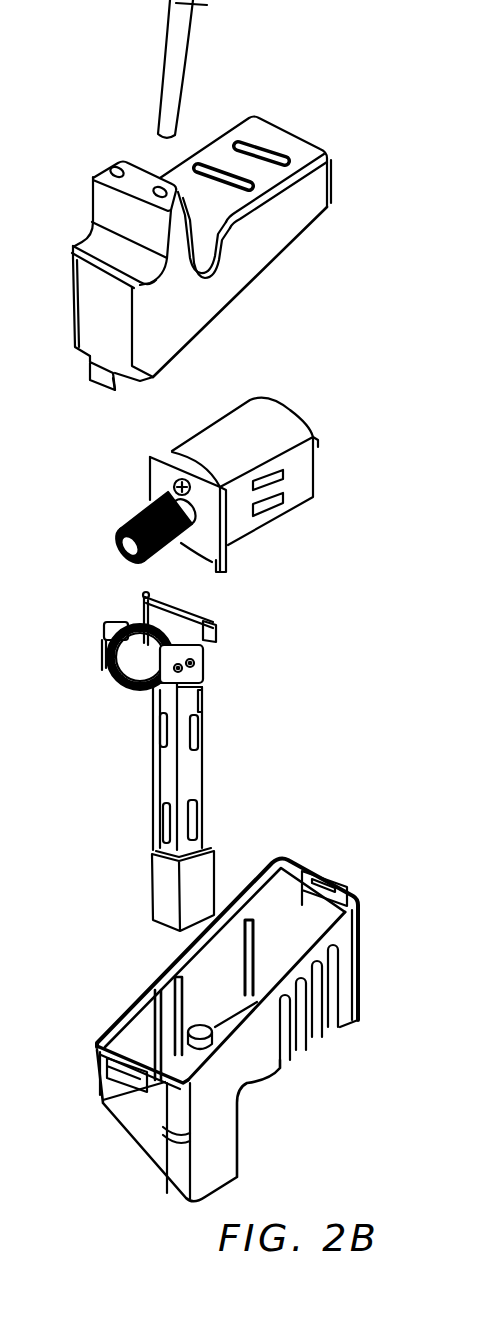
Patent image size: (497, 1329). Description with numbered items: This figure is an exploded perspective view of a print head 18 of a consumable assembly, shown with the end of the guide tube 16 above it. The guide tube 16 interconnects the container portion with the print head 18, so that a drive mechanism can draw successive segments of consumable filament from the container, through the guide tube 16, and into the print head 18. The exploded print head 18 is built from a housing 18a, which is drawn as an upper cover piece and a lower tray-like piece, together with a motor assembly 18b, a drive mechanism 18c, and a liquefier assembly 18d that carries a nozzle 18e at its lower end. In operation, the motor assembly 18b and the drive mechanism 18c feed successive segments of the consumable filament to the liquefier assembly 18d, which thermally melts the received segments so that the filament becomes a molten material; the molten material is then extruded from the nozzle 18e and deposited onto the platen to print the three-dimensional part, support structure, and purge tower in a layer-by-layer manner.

The guide tube 16 is at (182, 39).
The print head 18 is at (314, 95).
The housing 18a is at (290, 222).
The motor assembly 18b is at (278, 413).
The drive mechanism 18c is at (95, 617).
The liquefier assembly 18d is at (222, 769).
The nozzle 18e is at (155, 938).